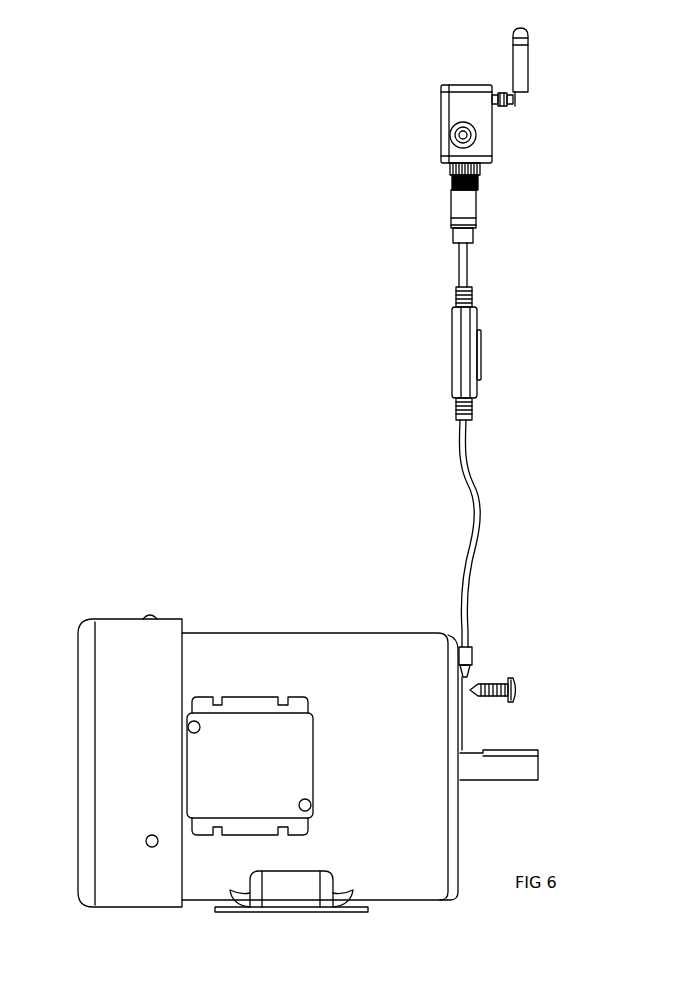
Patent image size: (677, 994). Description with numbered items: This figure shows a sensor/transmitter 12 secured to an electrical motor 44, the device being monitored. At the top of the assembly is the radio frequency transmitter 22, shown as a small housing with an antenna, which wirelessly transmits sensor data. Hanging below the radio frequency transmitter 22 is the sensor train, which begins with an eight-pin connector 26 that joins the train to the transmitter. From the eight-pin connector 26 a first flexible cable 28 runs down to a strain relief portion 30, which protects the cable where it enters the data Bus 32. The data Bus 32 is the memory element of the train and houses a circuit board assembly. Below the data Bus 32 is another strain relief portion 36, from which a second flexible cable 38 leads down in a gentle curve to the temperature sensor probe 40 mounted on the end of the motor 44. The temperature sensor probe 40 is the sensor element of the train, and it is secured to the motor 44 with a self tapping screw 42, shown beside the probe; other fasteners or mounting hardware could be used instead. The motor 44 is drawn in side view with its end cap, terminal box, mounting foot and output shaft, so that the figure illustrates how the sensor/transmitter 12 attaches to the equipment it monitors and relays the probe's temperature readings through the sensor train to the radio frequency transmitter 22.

The sensor/transmitter 12 is at (578, 360).
The radio frequency transmitter 22 is at (492, 132).
The 8 pin connector 26 is at (476, 212).
The first flexible cable 28 is at (467, 265).
The strain relief portion 30 is at (472, 295).
The data Bus 32 is at (478, 325).
The strain relief portion 36 is at (472, 415).
The second flexible cable 38 is at (482, 503).
The temperature sensor probe 40 is at (473, 652).
The self tapping screw 42 is at (510, 680).
The motor 44 is at (340, 632).